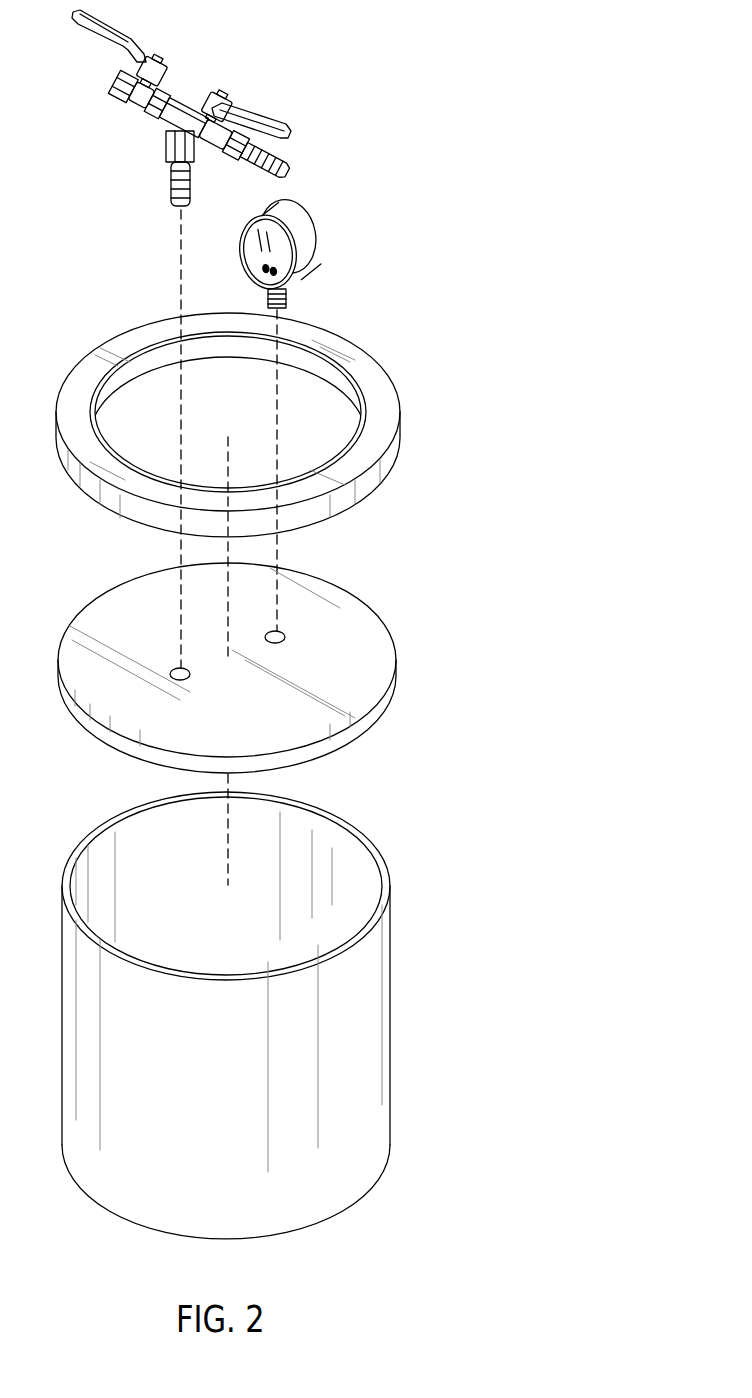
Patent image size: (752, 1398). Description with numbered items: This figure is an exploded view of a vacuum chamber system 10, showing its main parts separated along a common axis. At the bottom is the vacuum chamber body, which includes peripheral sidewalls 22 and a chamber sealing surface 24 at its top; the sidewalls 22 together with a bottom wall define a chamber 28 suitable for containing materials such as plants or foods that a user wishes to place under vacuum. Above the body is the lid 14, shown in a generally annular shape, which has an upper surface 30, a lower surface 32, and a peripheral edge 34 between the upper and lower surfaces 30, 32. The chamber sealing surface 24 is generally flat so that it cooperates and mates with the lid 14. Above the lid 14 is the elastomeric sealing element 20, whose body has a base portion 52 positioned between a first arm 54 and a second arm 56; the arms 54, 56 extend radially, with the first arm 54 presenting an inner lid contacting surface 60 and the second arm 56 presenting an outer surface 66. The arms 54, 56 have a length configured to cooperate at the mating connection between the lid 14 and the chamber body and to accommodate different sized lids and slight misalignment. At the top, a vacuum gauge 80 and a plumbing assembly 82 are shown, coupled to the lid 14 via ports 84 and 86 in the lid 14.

The vacuum chamber system 10 is at (438, 751).
The lid 14 is at (228, 677).
The elastomeric sealing element 20 is at (231, 407).
The peripheral sidewalls 22 is at (252, 1005).
The chamber sealing surface 24 is at (388, 878).
The chamber 28 is at (131, 841).
The upper surface 30 is at (352, 613).
The lower surface 32 is at (353, 745).
The peripheral edge 34 is at (97, 733).
The base portion 52 is at (80, 481).
The first arm 54 is at (160, 355).
The second arm 56 is at (78, 389).
The inner lid contacting surface 60 is at (215, 345).
The outer surface 66 is at (362, 372).
The vacuum gauge 80 is at (307, 225).
The plumbing assembly 82 is at (168, 152).
The port 84 is at (285, 640).
The port 86 is at (190, 676).